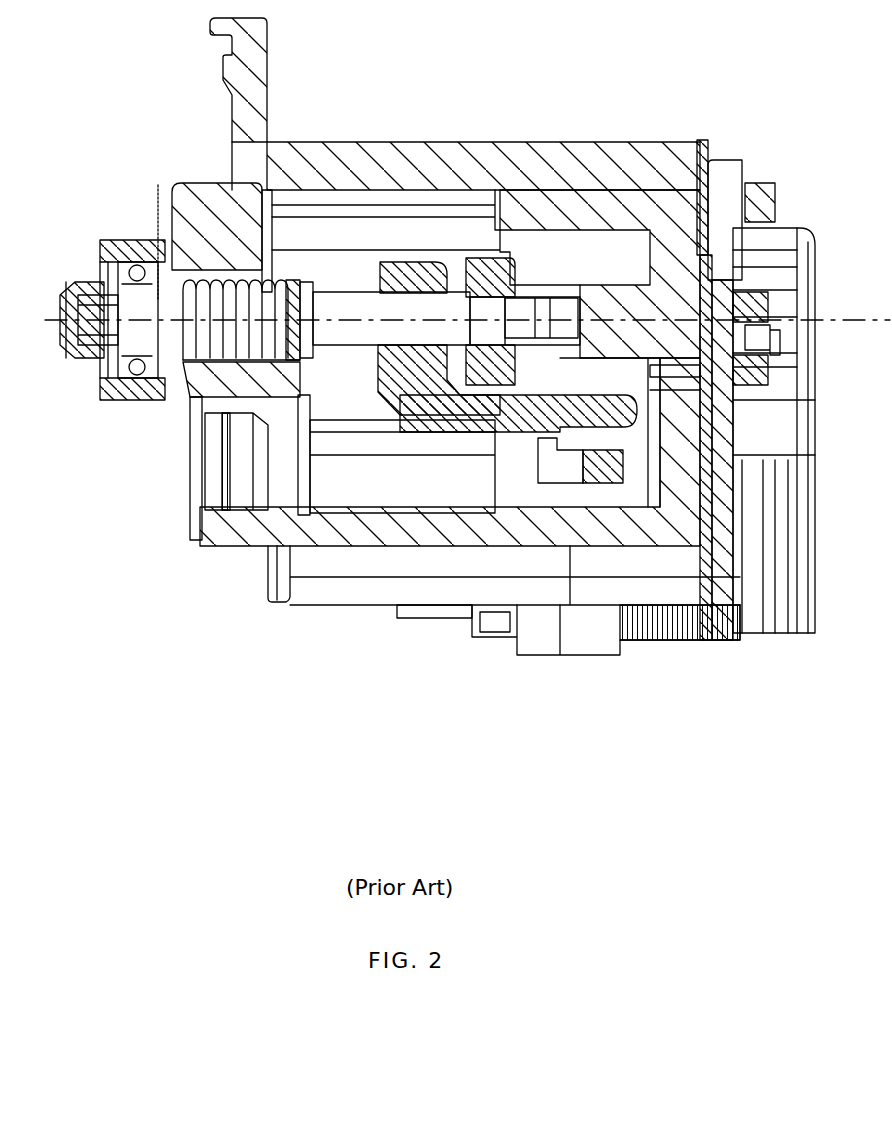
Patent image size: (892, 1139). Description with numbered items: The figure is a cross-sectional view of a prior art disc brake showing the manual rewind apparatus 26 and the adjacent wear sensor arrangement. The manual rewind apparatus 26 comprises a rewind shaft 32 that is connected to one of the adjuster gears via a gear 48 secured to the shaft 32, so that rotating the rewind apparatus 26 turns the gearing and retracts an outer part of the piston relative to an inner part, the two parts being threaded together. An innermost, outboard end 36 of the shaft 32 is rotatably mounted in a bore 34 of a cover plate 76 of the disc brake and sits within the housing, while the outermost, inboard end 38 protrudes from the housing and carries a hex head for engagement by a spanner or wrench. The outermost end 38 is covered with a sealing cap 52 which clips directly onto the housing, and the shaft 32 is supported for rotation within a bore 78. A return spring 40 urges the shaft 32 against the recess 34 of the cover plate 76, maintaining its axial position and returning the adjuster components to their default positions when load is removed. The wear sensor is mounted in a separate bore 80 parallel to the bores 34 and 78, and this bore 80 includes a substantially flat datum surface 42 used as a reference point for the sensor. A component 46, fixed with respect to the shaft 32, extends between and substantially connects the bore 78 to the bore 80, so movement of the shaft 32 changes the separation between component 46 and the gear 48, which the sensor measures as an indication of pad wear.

The manual rewind apparatus 26 is at (183, 283).
The rewind shaft 32 is at (365, 300).
The bore 34 is at (565, 305).
The innermost end 36 is at (543, 315).
The outermost end 38 is at (97, 297).
The return spring 40 is at (205, 350).
The datum surface 42 is at (548, 483).
The component 46 is at (413, 290).
The gear 48 is at (500, 255).
The sealing cap 52 is at (72, 352).
The cover plate 76 is at (707, 305).
The bore 78 is at (330, 290).
The bore 80 is at (362, 487).